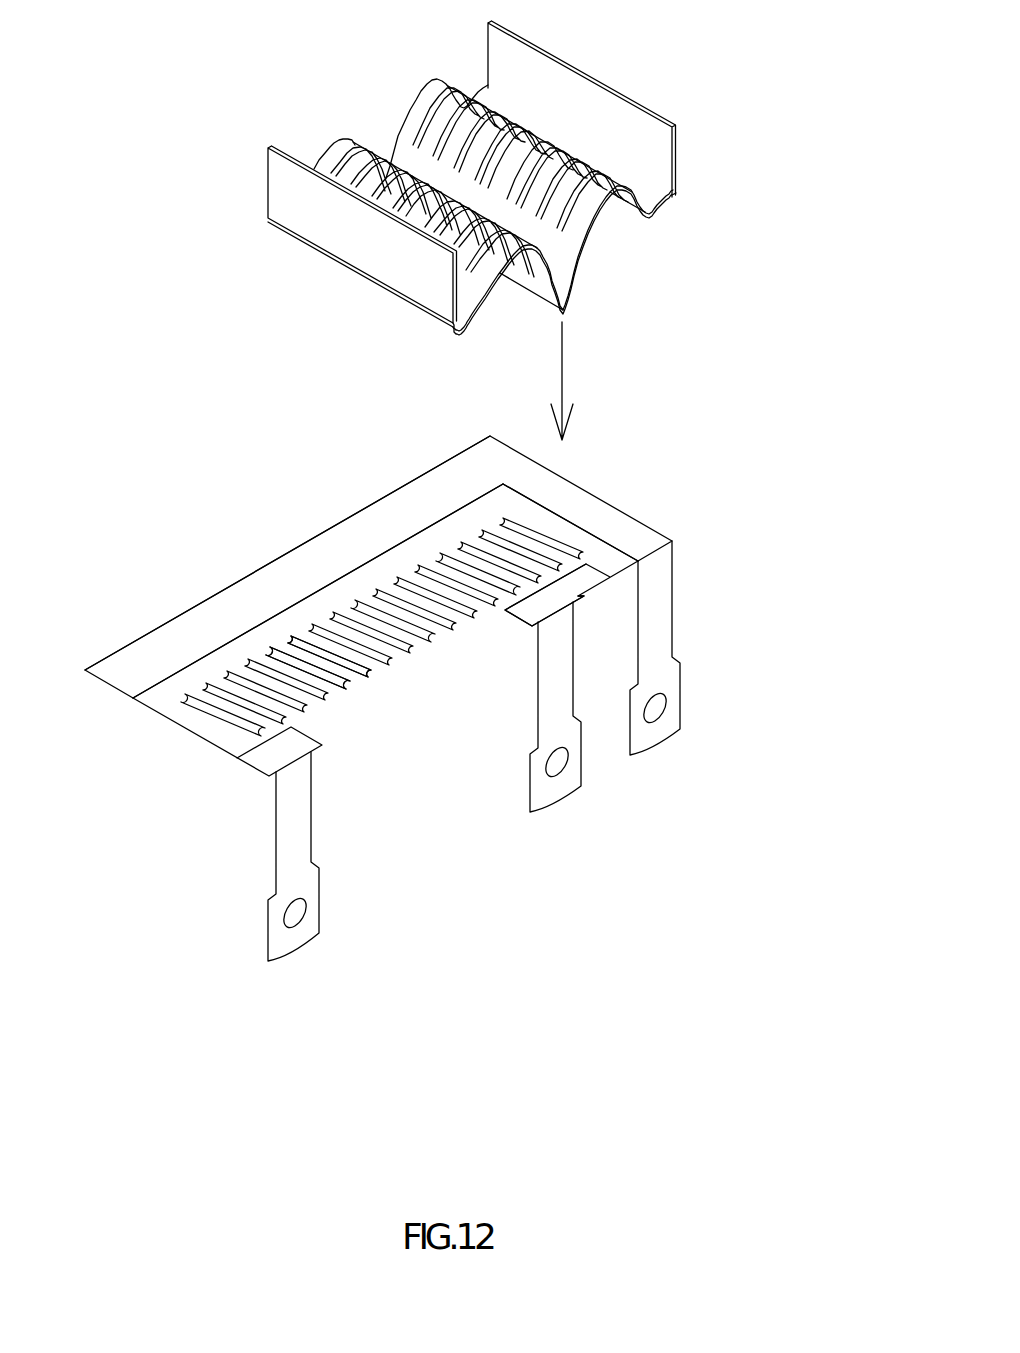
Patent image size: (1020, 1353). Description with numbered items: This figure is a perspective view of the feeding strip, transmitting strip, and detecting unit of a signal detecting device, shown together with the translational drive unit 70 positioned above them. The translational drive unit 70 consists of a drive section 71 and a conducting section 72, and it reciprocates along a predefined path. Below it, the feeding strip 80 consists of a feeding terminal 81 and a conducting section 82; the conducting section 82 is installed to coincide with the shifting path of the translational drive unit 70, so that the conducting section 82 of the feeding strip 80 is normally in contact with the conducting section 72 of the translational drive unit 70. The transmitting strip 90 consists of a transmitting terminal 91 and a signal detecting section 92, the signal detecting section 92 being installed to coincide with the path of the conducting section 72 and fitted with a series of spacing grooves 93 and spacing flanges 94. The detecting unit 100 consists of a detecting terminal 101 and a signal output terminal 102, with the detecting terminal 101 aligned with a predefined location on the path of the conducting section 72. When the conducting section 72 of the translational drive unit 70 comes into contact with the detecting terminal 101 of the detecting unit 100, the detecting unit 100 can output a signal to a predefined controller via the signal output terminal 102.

The translational drive unit 70 is at (537, 187).
The drive section 71 is at (668, 120).
The conducting section 72 is at (568, 316).
The feeding strip 80 is at (433, 597).
The feeding terminal 81 is at (683, 708).
The conducting section 82 is at (218, 614).
The transmitting strip 90 is at (257, 832).
The transmitting terminal 91 is at (320, 915).
The signal detecting section 92 is at (433, 552).
The spacing grooves 93 is at (357, 680).
The spacing flanges 94 is at (366, 672).
The detecting unit 100 is at (631, 705).
The detecting terminal 101 is at (537, 520).
The signal output terminal 102 is at (582, 772).